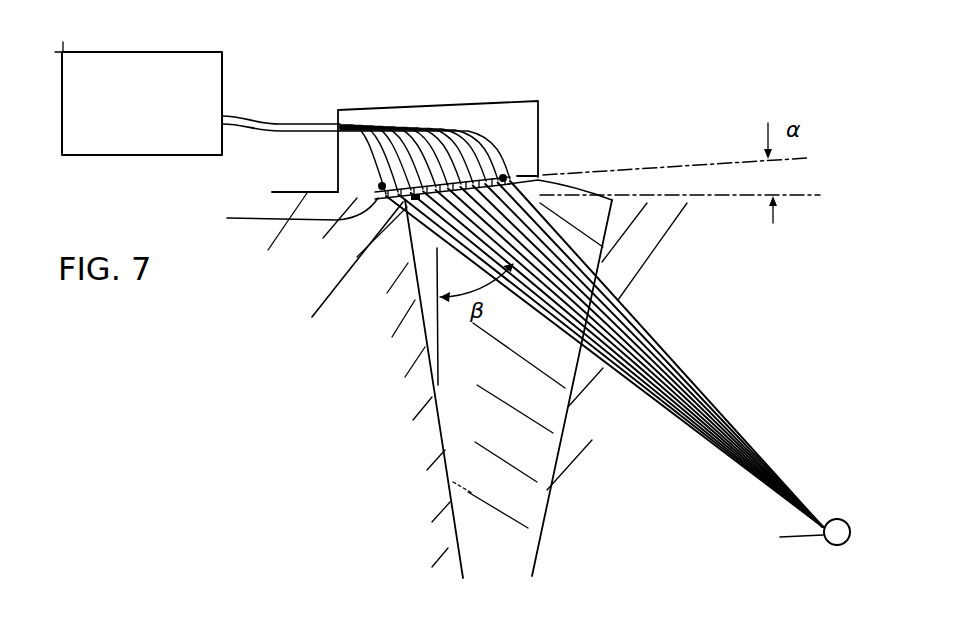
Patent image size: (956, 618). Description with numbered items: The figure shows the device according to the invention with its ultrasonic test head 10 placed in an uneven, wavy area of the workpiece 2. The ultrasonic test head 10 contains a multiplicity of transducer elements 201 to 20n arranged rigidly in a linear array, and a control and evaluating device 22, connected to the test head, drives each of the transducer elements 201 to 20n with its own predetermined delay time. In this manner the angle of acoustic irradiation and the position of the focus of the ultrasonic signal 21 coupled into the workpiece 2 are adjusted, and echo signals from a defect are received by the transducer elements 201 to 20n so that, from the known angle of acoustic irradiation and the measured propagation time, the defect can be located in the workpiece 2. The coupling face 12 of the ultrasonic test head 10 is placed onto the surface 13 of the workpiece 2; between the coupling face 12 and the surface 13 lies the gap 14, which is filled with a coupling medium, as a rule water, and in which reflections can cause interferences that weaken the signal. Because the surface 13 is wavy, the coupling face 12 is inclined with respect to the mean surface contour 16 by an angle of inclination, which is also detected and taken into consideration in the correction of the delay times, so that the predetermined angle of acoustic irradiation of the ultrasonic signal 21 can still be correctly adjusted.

The control and evaluating device 22 is at (185, 57).
The ultrasonic test head 10 is at (521, 123).
The first transducer element 201 is at (383, 185).
The n-th transducer element 20n is at (503, 178).
The surface 13 is at (290, 192).
The coupling face 12 is at (288, 214).
The workpiece 2 is at (298, 278).
The gap 14 is at (342, 279).
The ultrasonic signal 21 is at (683, 365).
The mean surface contour 16 is at (797, 199).